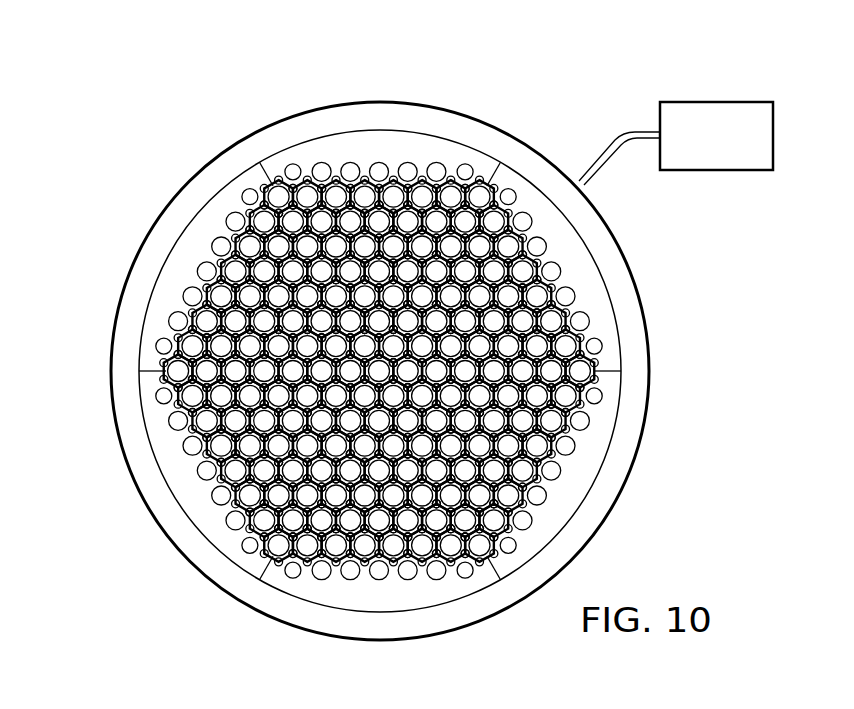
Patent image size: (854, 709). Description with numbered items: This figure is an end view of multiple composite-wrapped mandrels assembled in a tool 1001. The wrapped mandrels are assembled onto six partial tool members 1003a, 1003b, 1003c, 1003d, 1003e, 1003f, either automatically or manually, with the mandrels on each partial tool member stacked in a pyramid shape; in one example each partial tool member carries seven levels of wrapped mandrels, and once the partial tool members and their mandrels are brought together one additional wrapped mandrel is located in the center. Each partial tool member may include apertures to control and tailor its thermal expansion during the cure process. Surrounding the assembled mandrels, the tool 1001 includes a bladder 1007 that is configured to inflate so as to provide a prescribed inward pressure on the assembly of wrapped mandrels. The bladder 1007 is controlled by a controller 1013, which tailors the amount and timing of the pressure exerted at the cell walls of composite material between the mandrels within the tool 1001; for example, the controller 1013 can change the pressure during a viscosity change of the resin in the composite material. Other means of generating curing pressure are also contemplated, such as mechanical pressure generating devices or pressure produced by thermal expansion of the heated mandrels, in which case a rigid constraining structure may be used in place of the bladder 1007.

The tool 1001 is at (184, 141).
The partial tool member 1003a is at (382, 143).
The partial tool member 1003b is at (580, 263).
The partial tool member 1003c is at (582, 482).
The partial tool member 1003d is at (332, 595).
The partial tool member 1003e is at (178, 482).
The partial tool member 1003f is at (177, 263).
The bladder 1007 is at (650, 390).
The controller 1013 is at (745, 148).